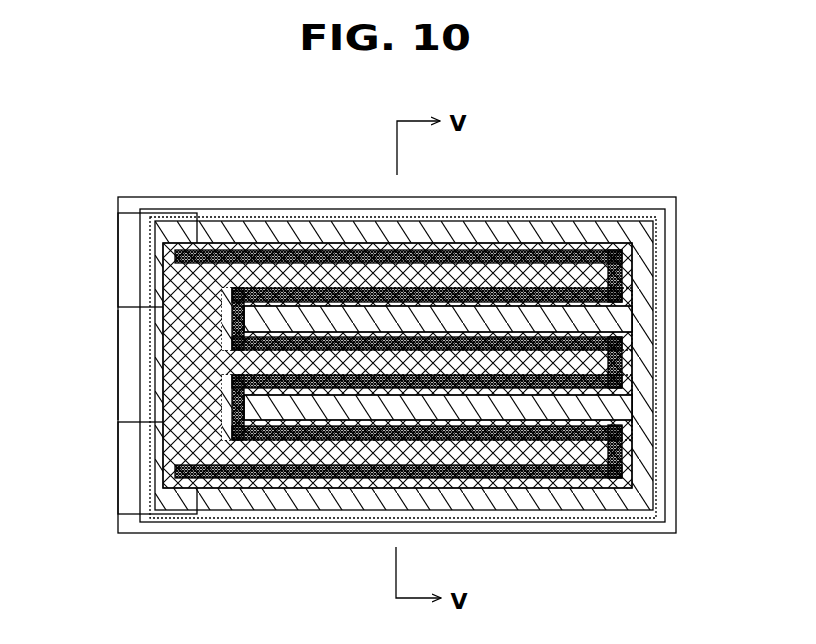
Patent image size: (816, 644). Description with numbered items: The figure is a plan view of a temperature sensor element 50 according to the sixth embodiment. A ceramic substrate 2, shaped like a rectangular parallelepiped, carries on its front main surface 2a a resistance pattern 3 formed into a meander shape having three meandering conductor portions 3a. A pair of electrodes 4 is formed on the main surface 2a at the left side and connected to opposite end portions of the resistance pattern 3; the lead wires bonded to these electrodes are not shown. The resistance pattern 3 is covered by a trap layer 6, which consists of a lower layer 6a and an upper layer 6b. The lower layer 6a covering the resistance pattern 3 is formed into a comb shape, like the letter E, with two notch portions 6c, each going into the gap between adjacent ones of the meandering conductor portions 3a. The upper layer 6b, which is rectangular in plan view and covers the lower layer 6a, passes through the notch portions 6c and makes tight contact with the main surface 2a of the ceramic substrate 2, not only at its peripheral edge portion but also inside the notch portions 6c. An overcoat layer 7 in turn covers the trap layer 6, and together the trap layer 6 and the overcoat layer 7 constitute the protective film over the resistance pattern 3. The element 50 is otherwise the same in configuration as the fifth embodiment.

The temperature sensor element 50 is at (679, 183).
The ceramic substrate 2 is at (619, 535).
The main surface 2a is at (127, 393).
The resistance pattern 3 is at (398, 375).
The meandering conductor portions 3a is at (262, 287).
The electrodes 4 is at (128, 260).
The trap layer 6 is at (756, 219).
The lower layer 6a is at (634, 250).
The upper layer 6b is at (656, 276).
The notch portions 6c is at (600, 322).
The overcoat layer 7 is at (668, 478).